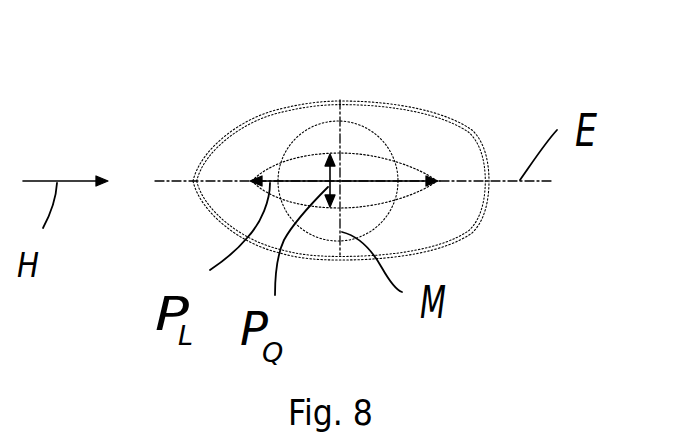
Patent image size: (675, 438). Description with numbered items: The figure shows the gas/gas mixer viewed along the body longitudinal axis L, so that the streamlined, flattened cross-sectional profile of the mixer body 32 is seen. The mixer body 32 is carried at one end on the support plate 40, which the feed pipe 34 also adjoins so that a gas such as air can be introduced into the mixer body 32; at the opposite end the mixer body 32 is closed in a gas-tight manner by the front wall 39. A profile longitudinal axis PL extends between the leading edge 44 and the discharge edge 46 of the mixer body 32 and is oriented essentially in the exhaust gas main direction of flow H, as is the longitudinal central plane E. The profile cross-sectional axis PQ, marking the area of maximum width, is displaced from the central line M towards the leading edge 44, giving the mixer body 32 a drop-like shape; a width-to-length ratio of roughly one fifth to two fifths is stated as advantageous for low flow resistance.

The mixer body 32 is at (416, 162).
The feed pipe 34 is at (375, 130).
The front wall 39 is at (300, 168).
The support plate 40 is at (453, 213).
The leading edge 44 is at (250, 180).
The discharge edge 46 is at (436, 181).